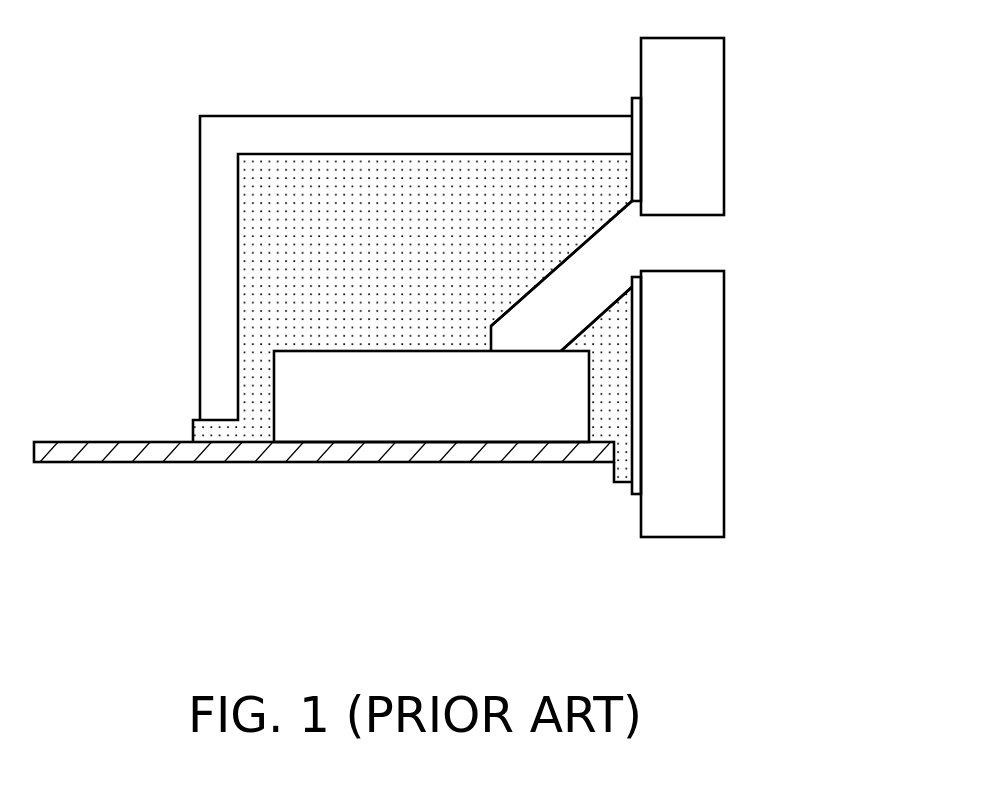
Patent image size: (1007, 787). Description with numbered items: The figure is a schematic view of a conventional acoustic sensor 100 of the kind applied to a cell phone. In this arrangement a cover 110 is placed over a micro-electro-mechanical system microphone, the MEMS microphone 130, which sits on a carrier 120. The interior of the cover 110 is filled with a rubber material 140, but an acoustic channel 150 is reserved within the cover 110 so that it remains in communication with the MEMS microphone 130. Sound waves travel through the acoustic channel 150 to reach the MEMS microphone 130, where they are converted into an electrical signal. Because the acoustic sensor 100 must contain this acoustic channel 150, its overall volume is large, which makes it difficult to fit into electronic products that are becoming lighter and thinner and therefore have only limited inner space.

The acoustic sensor 100 is at (825, 609).
The cover 110 is at (321, 132).
The carrier 120 is at (114, 448).
The MEMS microphone 130 is at (346, 418).
The rubber material 140 is at (475, 182).
The acoustic channel 150 is at (610, 253).